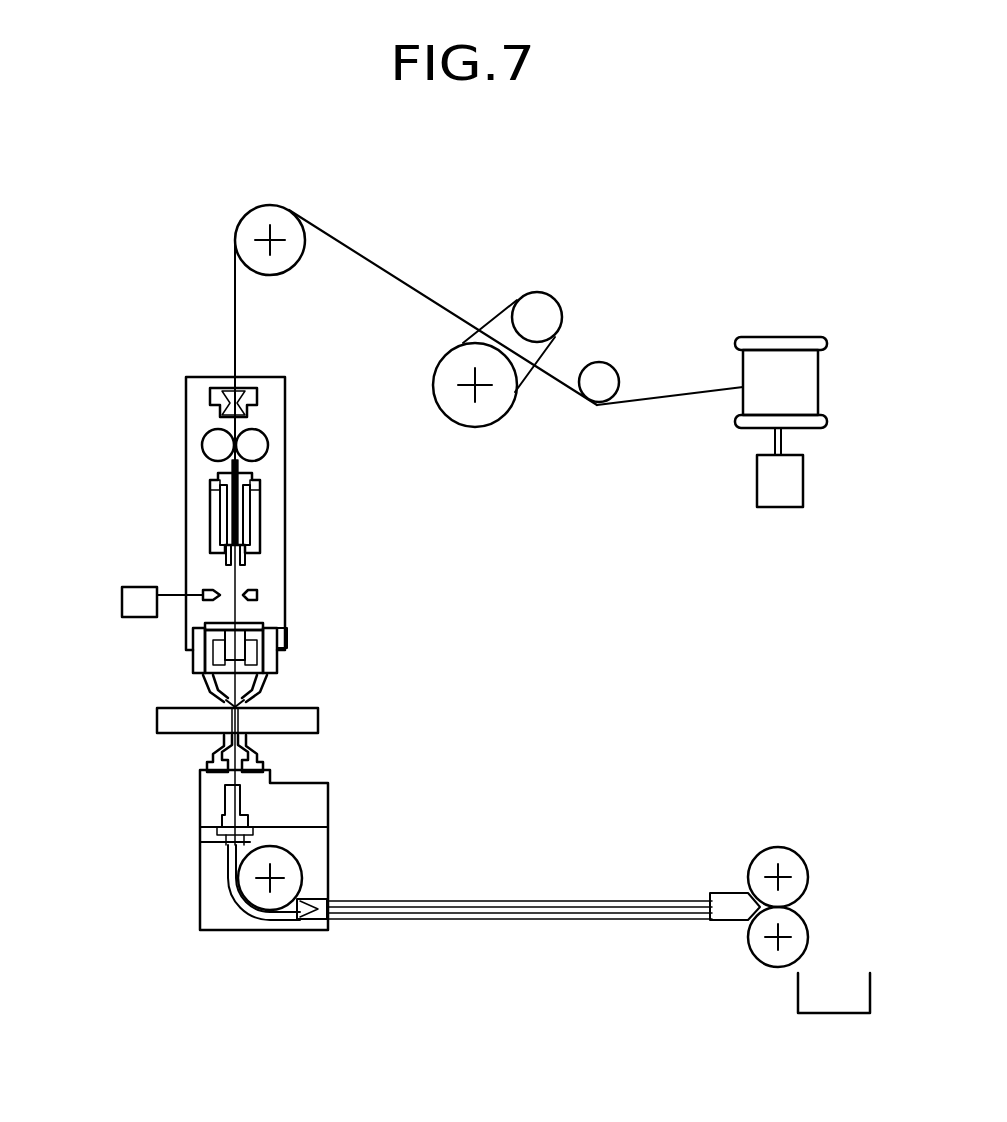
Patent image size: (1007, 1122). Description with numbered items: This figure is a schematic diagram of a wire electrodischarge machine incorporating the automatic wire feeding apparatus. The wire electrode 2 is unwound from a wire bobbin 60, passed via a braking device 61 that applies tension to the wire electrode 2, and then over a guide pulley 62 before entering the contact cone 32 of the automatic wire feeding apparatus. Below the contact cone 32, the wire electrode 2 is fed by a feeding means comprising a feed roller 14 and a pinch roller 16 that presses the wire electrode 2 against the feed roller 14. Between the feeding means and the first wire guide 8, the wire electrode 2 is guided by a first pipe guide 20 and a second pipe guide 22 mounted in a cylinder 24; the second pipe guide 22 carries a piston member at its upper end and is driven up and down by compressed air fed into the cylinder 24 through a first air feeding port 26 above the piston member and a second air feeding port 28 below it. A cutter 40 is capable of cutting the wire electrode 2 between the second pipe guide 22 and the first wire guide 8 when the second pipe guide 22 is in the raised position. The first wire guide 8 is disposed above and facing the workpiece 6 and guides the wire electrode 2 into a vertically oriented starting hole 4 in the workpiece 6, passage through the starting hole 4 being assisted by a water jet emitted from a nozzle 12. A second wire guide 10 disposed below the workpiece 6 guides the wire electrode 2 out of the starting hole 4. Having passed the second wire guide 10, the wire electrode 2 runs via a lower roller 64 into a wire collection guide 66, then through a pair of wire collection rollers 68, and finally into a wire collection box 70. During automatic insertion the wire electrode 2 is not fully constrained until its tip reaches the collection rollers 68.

The wire electrode 2 is at (372, 263).
The starting hole 4 is at (232, 706).
The workpiece 6 is at (318, 716).
The first wire guide 8 is at (265, 626).
The second wire guide 10 is at (260, 758).
The nozzle 12 is at (262, 683).
The feed roller 14 is at (204, 445).
The pinch roller 16 is at (267, 445).
The first pipe guide 20 is at (242, 465).
The second pipe guide 22 is at (247, 560).
The cylinder 24 is at (262, 527).
The first air feeding port 26 is at (210, 488).
The second air feeding port 28 is at (212, 540).
The contact cone 32 is at (210, 395).
The cutter 40 is at (122, 617).
The wire bobbin 60 is at (818, 380).
The braking device 61 is at (475, 428).
The guide pulley 62 is at (290, 222).
The lower roller 64 is at (302, 870).
The wire collection guide 66 is at (532, 902).
The pinch rollers 68 is at (798, 852).
The wire collection box 70 is at (798, 1000).